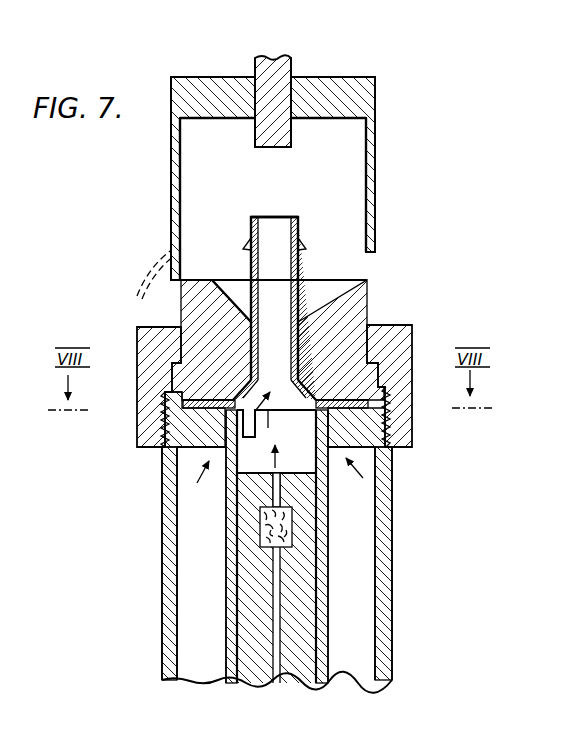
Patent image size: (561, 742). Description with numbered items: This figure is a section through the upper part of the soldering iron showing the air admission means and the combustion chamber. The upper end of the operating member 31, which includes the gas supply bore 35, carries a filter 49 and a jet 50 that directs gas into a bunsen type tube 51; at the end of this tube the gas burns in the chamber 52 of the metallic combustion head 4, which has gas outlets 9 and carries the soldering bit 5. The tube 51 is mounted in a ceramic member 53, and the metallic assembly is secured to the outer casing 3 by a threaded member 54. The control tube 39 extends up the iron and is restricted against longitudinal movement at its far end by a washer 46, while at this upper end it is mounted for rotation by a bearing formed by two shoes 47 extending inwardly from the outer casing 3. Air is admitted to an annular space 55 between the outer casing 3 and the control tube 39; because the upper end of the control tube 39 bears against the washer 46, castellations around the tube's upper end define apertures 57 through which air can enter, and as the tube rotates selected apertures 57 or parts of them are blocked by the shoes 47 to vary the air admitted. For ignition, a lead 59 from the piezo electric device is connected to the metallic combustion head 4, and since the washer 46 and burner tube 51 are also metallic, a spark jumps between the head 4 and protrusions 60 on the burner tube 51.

The outer casing 3 is at (166, 545).
The combustion head 4 is at (375, 180).
The soldering bit 5 is at (277, 60).
The gas outlets 9 is at (370, 263).
The operating member 31 is at (303, 677).
The central bore 35 is at (277, 667).
The control tube 39 is at (230, 593).
The washer 46 is at (388, 418).
The shoes 47 is at (380, 388).
The filter 49 is at (268, 525).
The jet 50 is at (265, 483).
The bunsen type tube 51 is at (297, 216).
The chamber 52 is at (354, 156).
The ceramic member 53 is at (360, 300).
The threaded member 54 is at (137, 327).
The annular space 55 is at (370, 560).
The apertures 57 is at (268, 421).
The lead 59 is at (148, 271).
The protrusions 60 is at (302, 246).